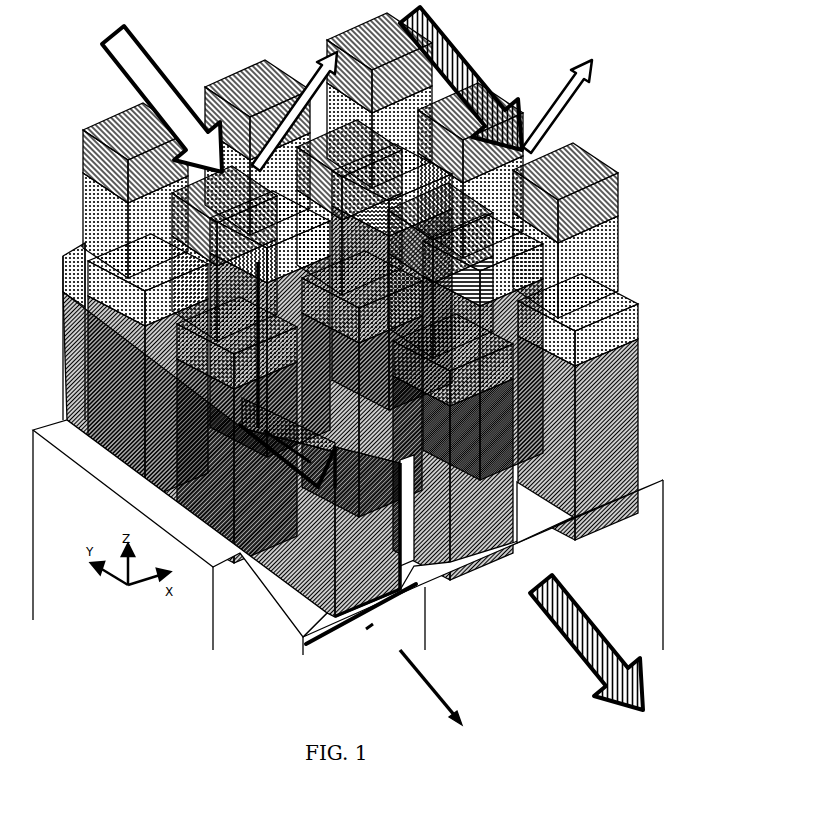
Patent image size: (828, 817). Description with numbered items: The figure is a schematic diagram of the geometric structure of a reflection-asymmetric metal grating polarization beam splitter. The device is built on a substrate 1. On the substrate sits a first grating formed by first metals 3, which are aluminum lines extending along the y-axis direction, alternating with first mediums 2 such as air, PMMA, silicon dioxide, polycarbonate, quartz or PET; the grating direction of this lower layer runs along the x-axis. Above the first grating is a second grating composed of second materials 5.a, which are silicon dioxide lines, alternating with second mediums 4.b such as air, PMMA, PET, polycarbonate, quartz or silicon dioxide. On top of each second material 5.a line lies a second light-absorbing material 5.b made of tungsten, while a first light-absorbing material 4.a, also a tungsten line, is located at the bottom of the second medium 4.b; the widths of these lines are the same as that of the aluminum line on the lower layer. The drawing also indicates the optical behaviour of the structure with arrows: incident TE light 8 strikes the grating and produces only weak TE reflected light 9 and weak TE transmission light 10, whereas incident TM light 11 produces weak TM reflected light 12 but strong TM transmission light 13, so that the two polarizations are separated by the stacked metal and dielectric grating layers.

The substrate 1 is at (588, 583).
The first medium 2 is at (530, 500).
The first metal 3 is at (492, 463).
The first light-absorbing material 4.a is at (500, 400).
The second medium 4.b is at (492, 363).
The second material 5.a is at (475, 293).
The second light-absorbing material 5.b is at (473, 244).
The incident TE light 8 is at (162, 99).
The weak TE reflected light 9 is at (294, 99).
The weak TE transmission light 10 is at (423, 687).
The incident TM light 11 is at (461, 78).
The weak TM reflected light 12 is at (571, 90).
The strong TM transmission light 13 is at (586, 642).